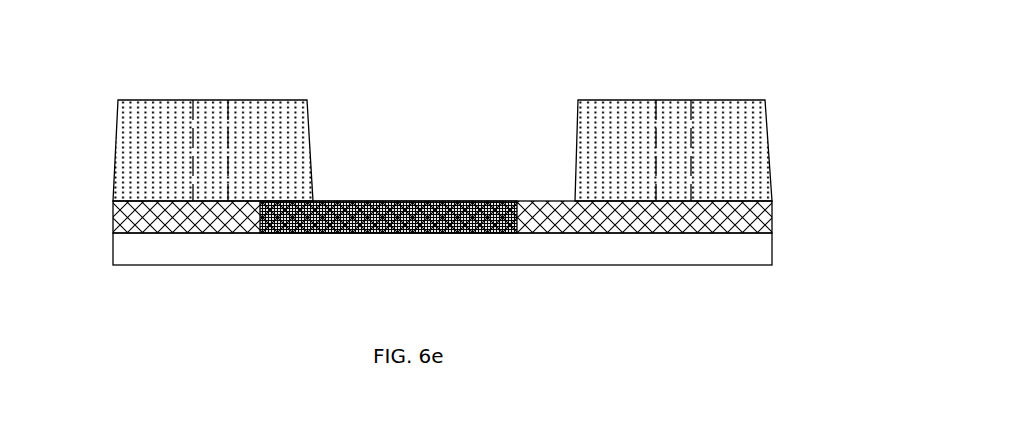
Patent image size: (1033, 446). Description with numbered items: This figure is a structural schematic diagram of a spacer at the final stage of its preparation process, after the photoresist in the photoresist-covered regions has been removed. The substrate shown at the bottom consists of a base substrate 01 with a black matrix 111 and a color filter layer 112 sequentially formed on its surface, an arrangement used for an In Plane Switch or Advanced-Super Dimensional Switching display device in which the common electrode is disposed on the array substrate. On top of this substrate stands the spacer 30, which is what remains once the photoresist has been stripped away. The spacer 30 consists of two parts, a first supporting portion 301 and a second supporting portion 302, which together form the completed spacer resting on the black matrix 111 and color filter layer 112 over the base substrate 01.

The base substrate 01 is at (762, 250).
The black matrix 111 is at (307, 218).
The color filter layer 112 is at (570, 210).
The spacer 30 is at (757, 148).
The first supporting portion 301 is at (215, 132).
The second supporting portion 302 is at (157, 175).